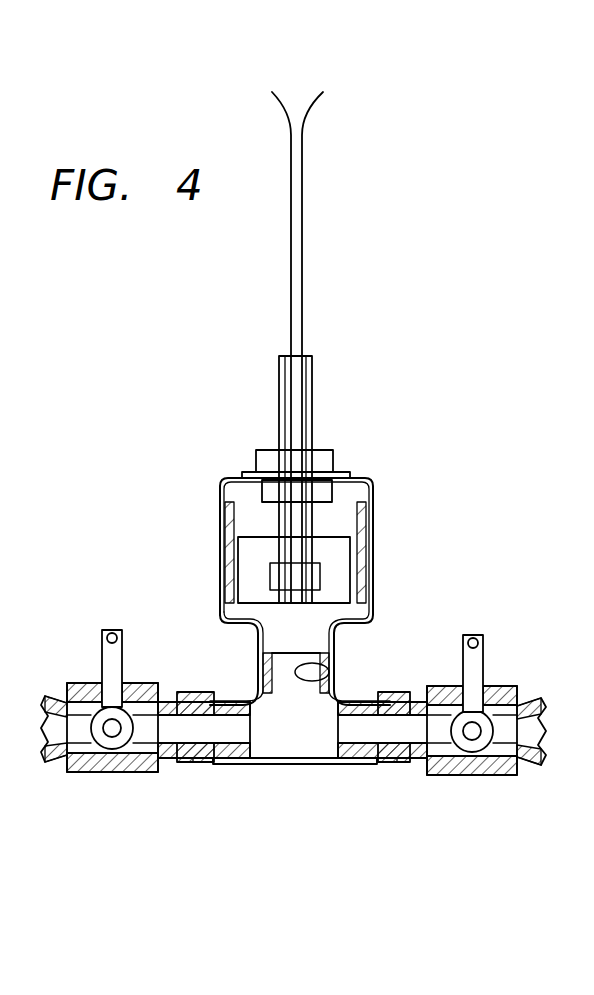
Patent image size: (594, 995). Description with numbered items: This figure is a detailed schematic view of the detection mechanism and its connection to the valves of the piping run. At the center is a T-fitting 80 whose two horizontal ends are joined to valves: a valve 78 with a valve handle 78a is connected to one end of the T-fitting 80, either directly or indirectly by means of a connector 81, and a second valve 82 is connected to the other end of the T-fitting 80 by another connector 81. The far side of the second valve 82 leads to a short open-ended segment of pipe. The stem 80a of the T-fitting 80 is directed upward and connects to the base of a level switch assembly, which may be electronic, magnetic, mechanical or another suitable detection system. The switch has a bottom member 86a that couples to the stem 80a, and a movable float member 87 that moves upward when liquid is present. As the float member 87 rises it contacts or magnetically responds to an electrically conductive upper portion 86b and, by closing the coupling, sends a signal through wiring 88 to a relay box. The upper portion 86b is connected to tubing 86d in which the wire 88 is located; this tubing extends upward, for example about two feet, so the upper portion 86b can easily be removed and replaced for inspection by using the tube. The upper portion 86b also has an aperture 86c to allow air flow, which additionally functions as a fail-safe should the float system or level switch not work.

The wiring 88 is at (302, 228).
The tubing 86d is at (312, 368).
The aperture 86c is at (338, 463).
The movable float member 87 is at (333, 537).
The upper portion 86b is at (373, 502).
The bottom member 86a is at (373, 610).
The T-fitting 80 is at (362, 700).
The connector 81 is at (200, 768).
The valve 78 is at (110, 775).
The valve handle 78a is at (118, 641).
The second valve 82 is at (470, 778).
The stem 80a is at (483, 656).